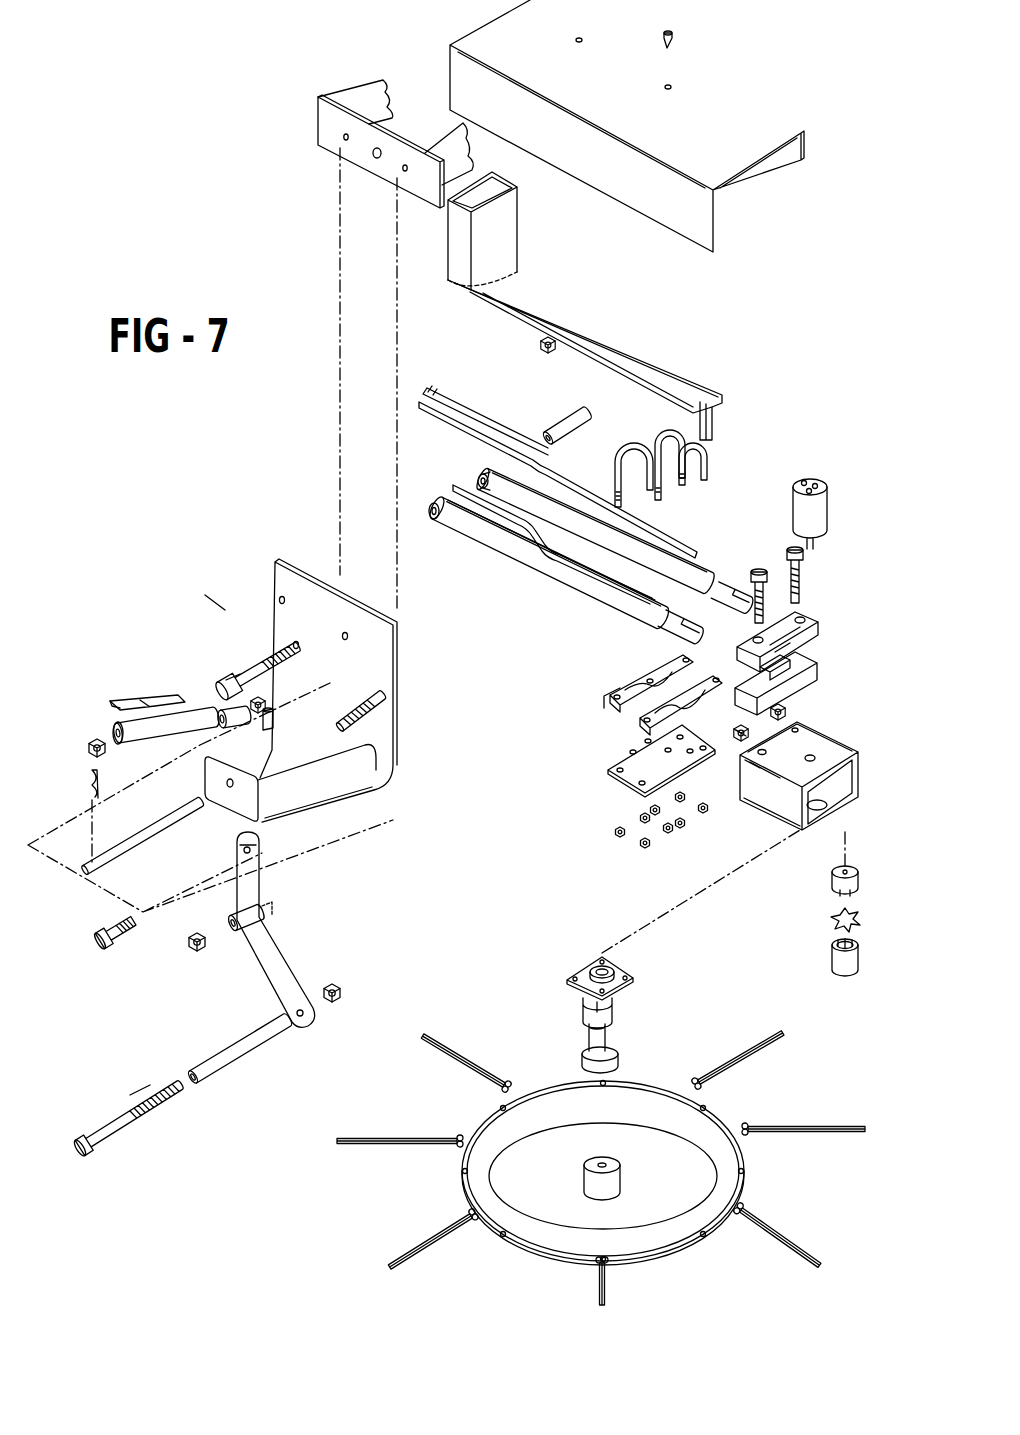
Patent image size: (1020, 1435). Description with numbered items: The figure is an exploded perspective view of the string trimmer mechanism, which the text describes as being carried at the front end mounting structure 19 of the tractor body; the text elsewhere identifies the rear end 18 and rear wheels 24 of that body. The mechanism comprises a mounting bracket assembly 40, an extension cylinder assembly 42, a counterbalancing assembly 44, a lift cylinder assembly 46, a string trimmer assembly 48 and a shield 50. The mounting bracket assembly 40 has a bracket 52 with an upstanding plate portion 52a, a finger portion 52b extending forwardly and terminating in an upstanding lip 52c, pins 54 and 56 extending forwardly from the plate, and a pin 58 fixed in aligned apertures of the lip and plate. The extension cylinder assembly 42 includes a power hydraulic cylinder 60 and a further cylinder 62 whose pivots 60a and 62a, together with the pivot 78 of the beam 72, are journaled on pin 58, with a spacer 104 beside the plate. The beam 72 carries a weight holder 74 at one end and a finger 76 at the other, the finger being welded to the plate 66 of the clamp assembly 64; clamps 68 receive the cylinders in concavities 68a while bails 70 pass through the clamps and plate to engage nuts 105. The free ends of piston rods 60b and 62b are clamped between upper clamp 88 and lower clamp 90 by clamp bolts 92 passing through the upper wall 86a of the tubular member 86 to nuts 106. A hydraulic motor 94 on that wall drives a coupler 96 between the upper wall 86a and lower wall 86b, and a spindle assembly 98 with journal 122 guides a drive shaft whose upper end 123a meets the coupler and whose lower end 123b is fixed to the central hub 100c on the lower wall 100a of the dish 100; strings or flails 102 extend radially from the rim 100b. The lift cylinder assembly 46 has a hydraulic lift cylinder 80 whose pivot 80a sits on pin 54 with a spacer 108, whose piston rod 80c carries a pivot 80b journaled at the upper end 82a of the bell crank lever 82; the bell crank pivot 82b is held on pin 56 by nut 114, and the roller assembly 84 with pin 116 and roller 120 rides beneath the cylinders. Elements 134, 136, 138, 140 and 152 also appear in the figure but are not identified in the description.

The front end mounting structure 19 is at (318, 122).
The rear wheels 24 is at (673, 43).
The shield 50 is at (774, 115).
The weight holder 74 is at (507, 233).
The beam 72 is at (553, 297).
The counterbalancing assembly 44 is at (622, 335).
The finger 76 is at (713, 425).
The pivot 78 is at (550, 354).
The spacer 104 is at (558, 423).
The rod 134 is at (447, 398).
The rod 136 is at (673, 537).
The power hydraulic cylinder 60 is at (557, 501).
The pivot of hydraulic cylinder 60a is at (481, 473).
The piston rod of hydraulic cylinder 60b is at (738, 586).
The further cylinder 62 is at (515, 548).
The pivot of further cylinder 62a is at (434, 522).
The piston rod of further cylinder 62b is at (699, 648).
The guide rod 152 is at (605, 565).
The extension cylinder assembly 42 is at (519, 584).
The bails 70 is at (708, 470).
The hydraulic motor 94 is at (810, 477).
The clamp bolts 92 is at (799, 572).
The upper clamp 88 is at (815, 627).
The lower clamp 90 is at (815, 662).
The tubular member 86 is at (802, 855).
The upper wall of tubular member 86a is at (822, 745).
The lower wall of tubular member 86b is at (793, 823).
The nuts 106 is at (740, 745).
The coupler 96 is at (826, 966).
The clamp assembly 64 is at (577, 670).
The concavities 68a is at (662, 668).
The clamps 68 is at (642, 706).
The plate 66 is at (608, 775).
The nuts 105 is at (645, 849).
The bracket 52 is at (410, 682).
The main body upstanding plate portion 52a is at (316, 628).
The finger portion 52b is at (300, 807).
The upstanding lip 52c is at (233, 805).
The pivot pin 56 is at (385, 706).
The pivot pin 54 is at (262, 664).
The spacer 108 is at (222, 686).
The mounting bracket assembly 40 is at (215, 611).
The lift cylinder assembly 46 is at (119, 680).
The hydraulic lift cylinder 80 is at (168, 732).
The pivot of lift cylinder 80a is at (115, 728).
The piston rod of lift cylinder 80c is at (221, 716).
The pivot of piston rod 80b is at (272, 716).
The lever 138 is at (152, 697).
The lever tab 140 is at (112, 705).
The pivot pin 58 is at (141, 833).
The bell crank lever 82 is at (292, 952).
The upper end of bell crank 82a is at (259, 862).
The pivot of bell crank 82b is at (232, 912).
The nut 114 is at (191, 949).
The rear end 18 is at (340, 1000).
The roller assembly 84 is at (140, 1078).
The pin 116 is at (113, 1131).
The roller 120 is at (226, 1063).
The spindle assembly 98 is at (652, 979).
The string trimmer assembly 48 is at (510, 980).
The upper end of drive shaft 123a is at (589, 965).
The journal 122 is at (573, 974).
The lower end of drive shaft 123b is at (617, 1058).
The dish 100 is at (487, 1234).
The lower wall of dish 100a is at (603, 1176).
The rim of dish 100b is at (669, 1105).
The central hub 100c is at (588, 1158).
The strings or flails 102 is at (396, 1137).